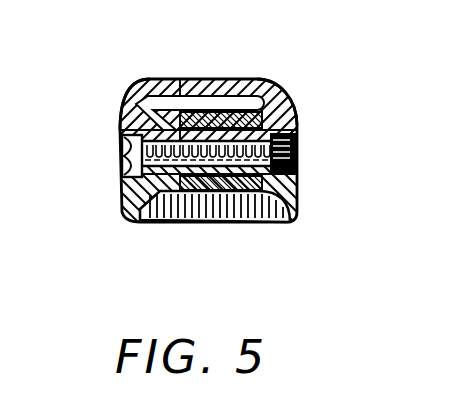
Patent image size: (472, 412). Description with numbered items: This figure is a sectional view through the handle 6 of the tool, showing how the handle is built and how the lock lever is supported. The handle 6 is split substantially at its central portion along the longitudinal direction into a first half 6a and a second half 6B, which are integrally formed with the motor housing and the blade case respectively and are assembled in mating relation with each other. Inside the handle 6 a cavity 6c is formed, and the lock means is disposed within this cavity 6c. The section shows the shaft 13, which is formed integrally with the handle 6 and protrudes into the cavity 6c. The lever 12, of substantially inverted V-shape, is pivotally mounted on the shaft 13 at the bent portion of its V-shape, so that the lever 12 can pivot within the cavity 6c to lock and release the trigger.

The handle 6 is at (248, 82).
The first half 6a is at (285, 98).
The second half 6B is at (135, 108).
The cavity 6c is at (222, 222).
The lever 12 is at (197, 222).
The shaft 13 is at (209, 112).